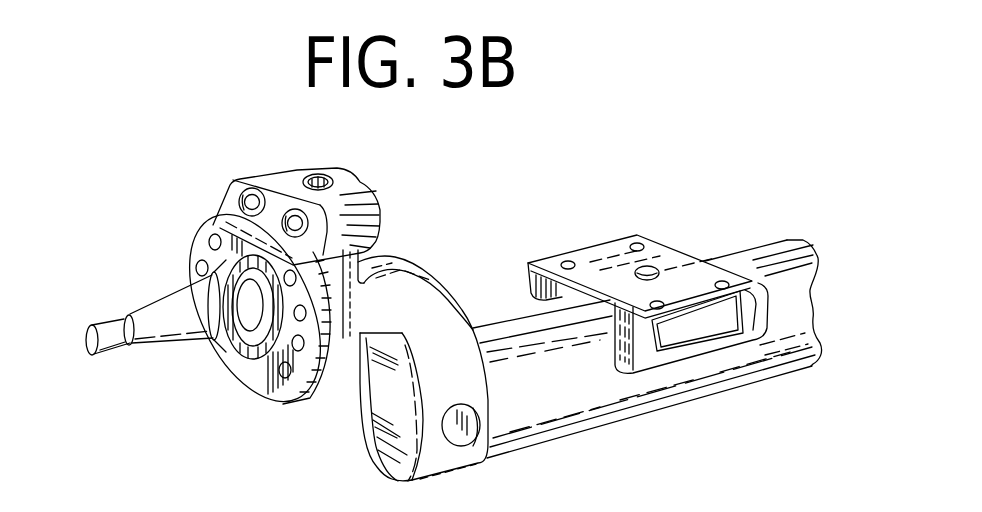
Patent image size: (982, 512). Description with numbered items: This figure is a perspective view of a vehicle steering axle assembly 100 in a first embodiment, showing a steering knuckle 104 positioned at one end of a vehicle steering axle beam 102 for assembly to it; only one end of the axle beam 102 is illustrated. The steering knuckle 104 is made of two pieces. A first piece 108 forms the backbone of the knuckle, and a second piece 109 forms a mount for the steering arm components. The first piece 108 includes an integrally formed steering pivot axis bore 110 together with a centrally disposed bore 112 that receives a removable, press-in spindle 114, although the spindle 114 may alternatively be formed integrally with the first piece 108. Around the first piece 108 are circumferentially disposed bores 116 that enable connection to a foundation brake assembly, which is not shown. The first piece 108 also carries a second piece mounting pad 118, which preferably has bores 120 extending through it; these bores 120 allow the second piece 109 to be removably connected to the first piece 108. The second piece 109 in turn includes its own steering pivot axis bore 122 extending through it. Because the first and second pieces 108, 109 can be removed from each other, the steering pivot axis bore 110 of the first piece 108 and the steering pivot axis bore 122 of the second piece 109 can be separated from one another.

The vehicle steering axle assembly 100 is at (278, 140).
The vehicle steering axle beam 102 is at (780, 253).
The steering knuckle 104 is at (236, 398).
The first piece 108 is at (225, 352).
The second piece 109 is at (295, 178).
The steering pivot axis bore 110 is at (293, 400).
The centrally disposed bore 112 is at (198, 282).
The spindle 114 is at (138, 315).
The circumferentially disposed bores 116 is at (205, 236).
The second piece mounting pad 118 is at (272, 205).
The bores 120 is at (300, 224).
The steering pivot axis bore 122 is at (330, 183).